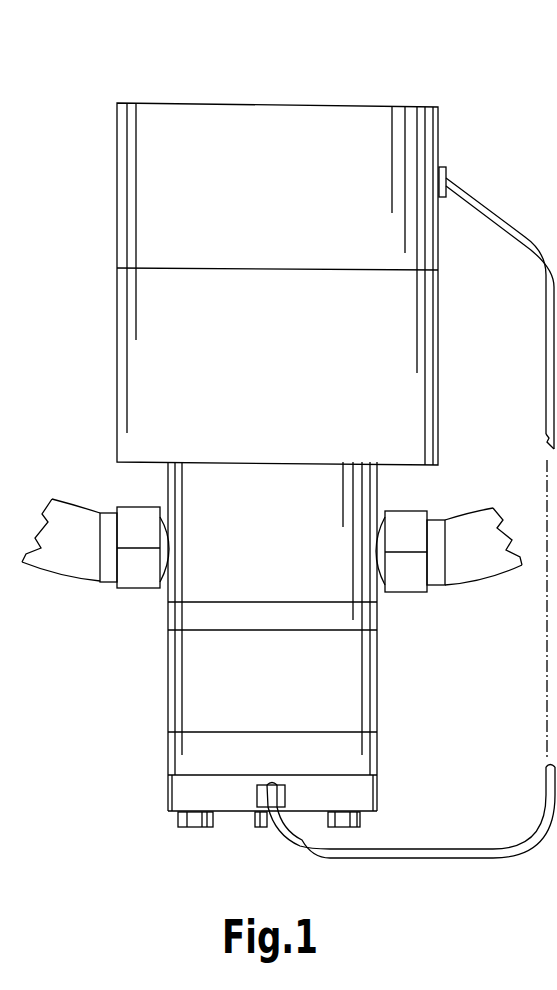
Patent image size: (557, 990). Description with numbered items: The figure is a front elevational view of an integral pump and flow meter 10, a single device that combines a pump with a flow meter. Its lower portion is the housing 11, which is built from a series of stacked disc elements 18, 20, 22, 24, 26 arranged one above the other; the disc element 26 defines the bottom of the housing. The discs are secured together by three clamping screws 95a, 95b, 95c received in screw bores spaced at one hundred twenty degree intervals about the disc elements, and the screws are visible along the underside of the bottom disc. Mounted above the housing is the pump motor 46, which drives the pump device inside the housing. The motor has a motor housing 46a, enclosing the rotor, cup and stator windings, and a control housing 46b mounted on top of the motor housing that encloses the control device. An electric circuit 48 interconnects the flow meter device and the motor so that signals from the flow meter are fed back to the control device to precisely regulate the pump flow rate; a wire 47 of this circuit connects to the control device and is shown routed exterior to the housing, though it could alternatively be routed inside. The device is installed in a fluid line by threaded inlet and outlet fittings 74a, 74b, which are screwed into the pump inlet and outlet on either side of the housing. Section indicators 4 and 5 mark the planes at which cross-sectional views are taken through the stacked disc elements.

The integral pump and flow meter 10 is at (449, 84).
The housing 11 is at (382, 687).
The disc element 18 is at (168, 478).
The disc element 20 is at (167, 615).
The disc element 22 is at (167, 674).
The disc element 24 is at (167, 749).
The disc element 26 is at (167, 793).
The pump motor 46 is at (444, 149).
The motor housing 46a is at (118, 344).
The control housing 46b is at (118, 163).
The wire 47 is at (530, 232).
The electric circuit 48 is at (505, 836).
The threaded inlet fitting 74a is at (402, 510).
The threaded outlet fitting 74b is at (145, 506).
The clamping screw 95a is at (190, 827).
The clamping screw 95b is at (265, 827).
The clamping screw 95c is at (360, 818).
The section line 4- 4 is at (148, 600).
The section line 5- 5 is at (145, 729).